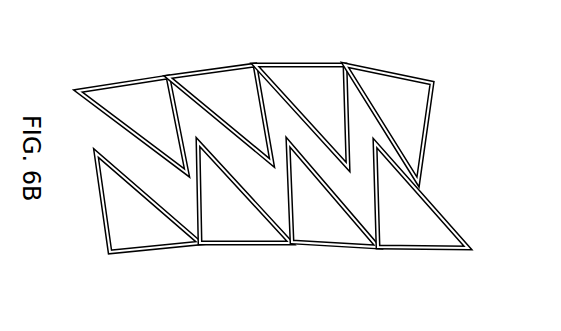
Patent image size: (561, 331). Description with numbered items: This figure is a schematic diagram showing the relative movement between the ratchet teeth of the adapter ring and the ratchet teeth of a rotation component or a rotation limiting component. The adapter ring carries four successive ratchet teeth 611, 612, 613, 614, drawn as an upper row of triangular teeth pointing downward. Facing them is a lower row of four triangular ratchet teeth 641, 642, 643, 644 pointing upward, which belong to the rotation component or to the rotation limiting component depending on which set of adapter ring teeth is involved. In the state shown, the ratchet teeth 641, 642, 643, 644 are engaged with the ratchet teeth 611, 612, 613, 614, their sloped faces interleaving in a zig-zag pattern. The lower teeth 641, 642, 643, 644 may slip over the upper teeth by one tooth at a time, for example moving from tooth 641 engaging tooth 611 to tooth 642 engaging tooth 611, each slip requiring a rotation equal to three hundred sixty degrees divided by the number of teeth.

The ratchet tooth 611 is at (388, 123).
The ratchet tooth 612 is at (301, 116).
The ratchet tooth 613 is at (220, 114).
The ratchet tooth 614 is at (132, 125).
The ratchet tooth 641 is at (421, 195).
The ratchet tooth 642 is at (333, 194).
The ratchet tooth 643 is at (244, 192).
The ratchet tooth 644 is at (148, 202).